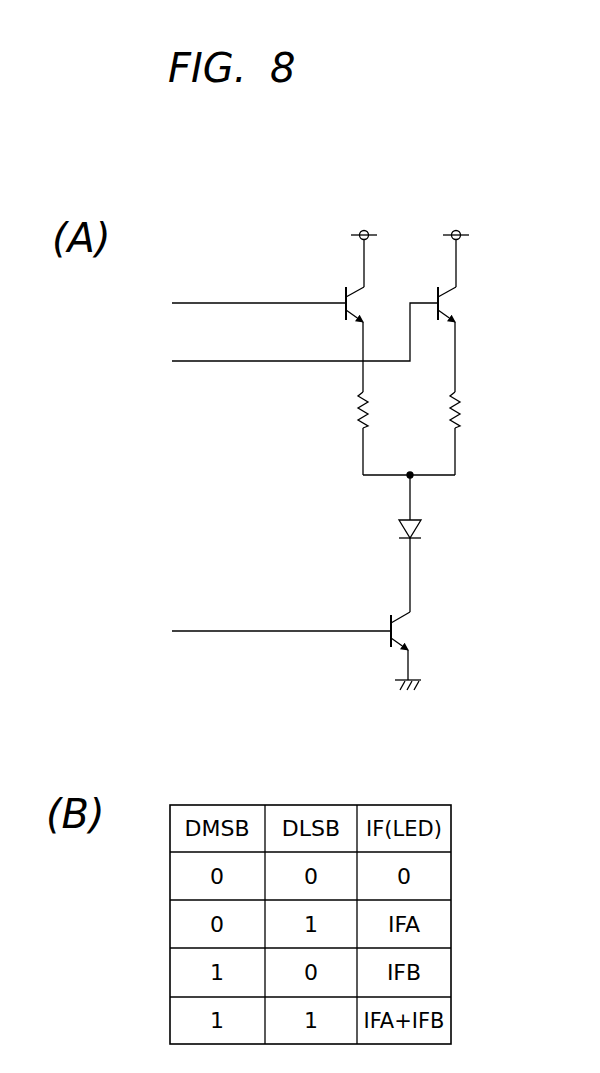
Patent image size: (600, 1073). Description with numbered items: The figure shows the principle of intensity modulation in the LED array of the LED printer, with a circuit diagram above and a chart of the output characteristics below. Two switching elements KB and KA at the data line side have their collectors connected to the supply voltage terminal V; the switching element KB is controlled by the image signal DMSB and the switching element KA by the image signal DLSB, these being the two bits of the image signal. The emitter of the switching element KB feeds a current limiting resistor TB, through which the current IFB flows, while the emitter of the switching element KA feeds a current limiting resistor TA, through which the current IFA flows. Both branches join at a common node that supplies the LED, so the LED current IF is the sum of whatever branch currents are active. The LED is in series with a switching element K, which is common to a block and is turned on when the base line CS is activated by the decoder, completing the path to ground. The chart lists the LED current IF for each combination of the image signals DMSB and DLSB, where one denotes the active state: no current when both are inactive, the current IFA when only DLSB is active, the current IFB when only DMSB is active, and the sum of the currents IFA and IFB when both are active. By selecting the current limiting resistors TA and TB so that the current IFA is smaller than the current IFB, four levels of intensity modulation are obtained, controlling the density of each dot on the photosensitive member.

The supply voltage terminal V is at (410, 246).
The switching element KB is at (345, 325).
The switching element KA is at (436, 325).
The image signal DMSB is at (258, 292).
The image signal DLSB is at (304, 332).
The current limiting resistor TB is at (380, 433).
The current limiting resistor TA is at (471, 433).
The current IFB is at (347, 398).
The current IFA is at (438, 398).
The LED current IF is at (387, 520).
The switching element K is at (411, 651).
The base line CS is at (281, 618).